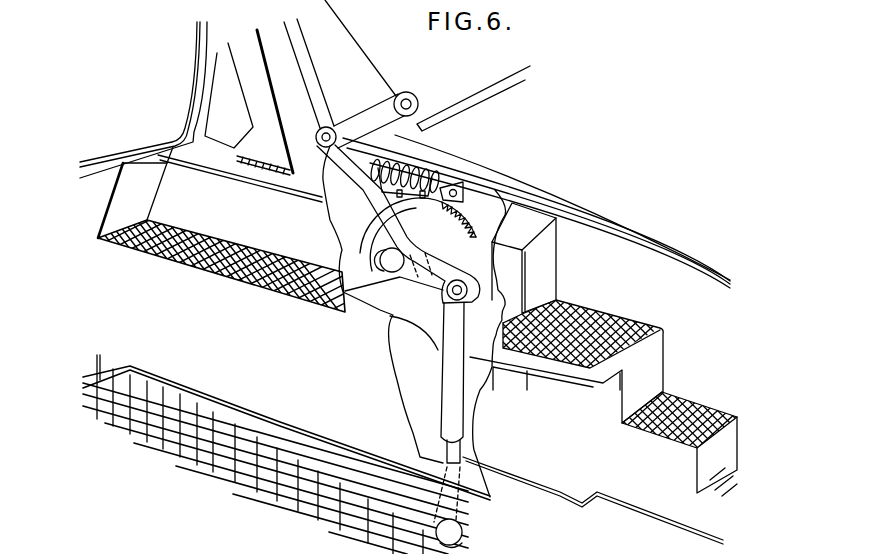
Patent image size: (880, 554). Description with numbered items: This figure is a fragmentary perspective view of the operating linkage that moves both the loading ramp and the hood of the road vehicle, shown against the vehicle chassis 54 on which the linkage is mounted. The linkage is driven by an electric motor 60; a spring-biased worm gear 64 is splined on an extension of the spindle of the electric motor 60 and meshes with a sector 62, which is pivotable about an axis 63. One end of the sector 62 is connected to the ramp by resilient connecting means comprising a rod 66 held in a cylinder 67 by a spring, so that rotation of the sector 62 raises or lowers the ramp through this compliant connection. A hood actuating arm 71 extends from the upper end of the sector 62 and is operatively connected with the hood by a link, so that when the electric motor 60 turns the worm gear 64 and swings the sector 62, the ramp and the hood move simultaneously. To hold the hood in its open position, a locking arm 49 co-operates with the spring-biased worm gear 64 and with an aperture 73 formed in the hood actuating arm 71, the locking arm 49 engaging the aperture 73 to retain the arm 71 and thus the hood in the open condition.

The locking arm 49 is at (362, 205).
The chassis 54 is at (418, 319).
The electric motor 60 is at (318, 182).
The sector 62 is at (463, 248).
The axis 63 is at (340, 298).
The spring-biased worm gear 64 is at (425, 177).
The rod 66 is at (452, 500).
The cylinder 67 is at (453, 392).
The hood actuating arm 71 is at (377, 223).
The aperture 73 is at (304, 199).